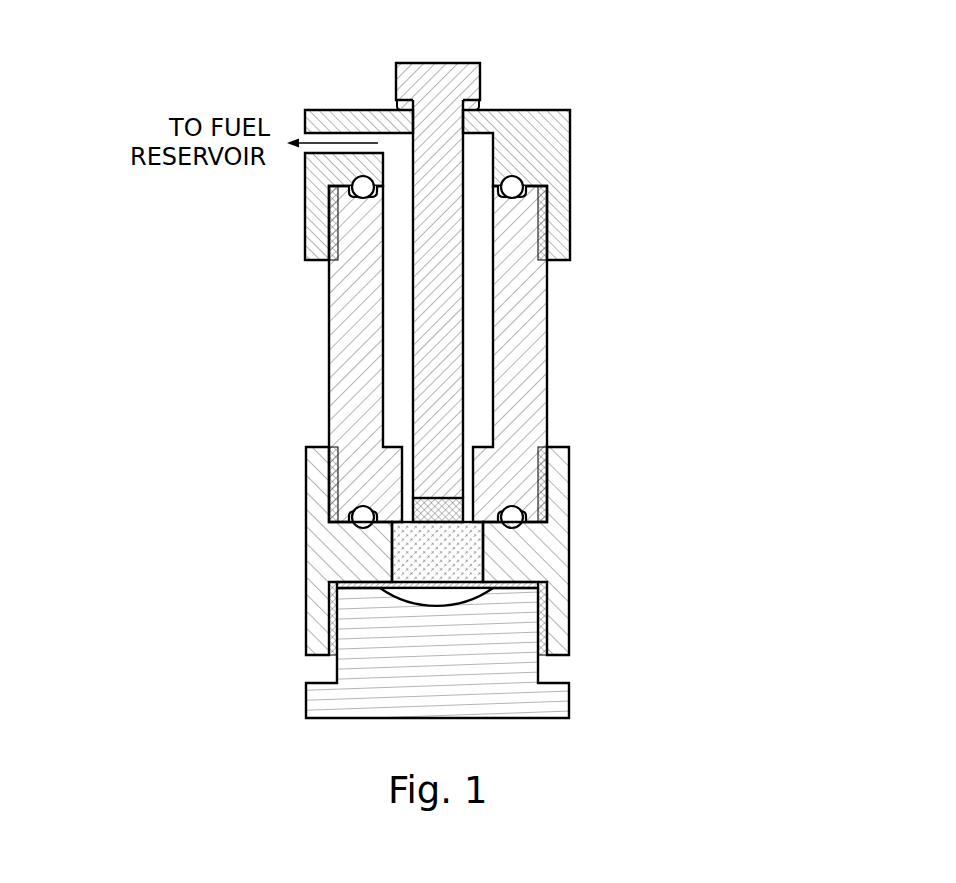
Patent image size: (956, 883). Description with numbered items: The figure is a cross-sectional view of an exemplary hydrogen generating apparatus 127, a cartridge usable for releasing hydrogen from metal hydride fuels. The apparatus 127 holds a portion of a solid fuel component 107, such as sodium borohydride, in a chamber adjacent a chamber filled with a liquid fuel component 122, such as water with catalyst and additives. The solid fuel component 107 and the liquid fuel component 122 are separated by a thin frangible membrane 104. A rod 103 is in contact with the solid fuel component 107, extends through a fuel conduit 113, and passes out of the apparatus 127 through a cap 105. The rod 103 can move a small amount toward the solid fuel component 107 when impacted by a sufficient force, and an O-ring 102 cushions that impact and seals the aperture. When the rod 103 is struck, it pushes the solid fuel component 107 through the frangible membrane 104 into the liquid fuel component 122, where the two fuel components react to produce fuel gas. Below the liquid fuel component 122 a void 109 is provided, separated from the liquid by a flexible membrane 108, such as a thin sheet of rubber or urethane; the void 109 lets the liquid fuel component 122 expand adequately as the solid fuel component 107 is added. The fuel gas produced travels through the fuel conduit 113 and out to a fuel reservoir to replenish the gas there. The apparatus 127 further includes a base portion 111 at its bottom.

The O-ring 102 is at (397, 107).
The rod 103 is at (480, 82).
The frangible membrane 104 is at (397, 527).
The cap 105 is at (555, 158).
The solid fuel component 107 is at (452, 508).
The flexible membrane 108 is at (463, 588).
The void 109 is at (440, 604).
The base portion 111 is at (570, 705).
The fuel conduit 113 is at (473, 335).
The liquid fuel component 122 is at (467, 548).
The hydrogen generating apparatus 127 is at (298, 332).